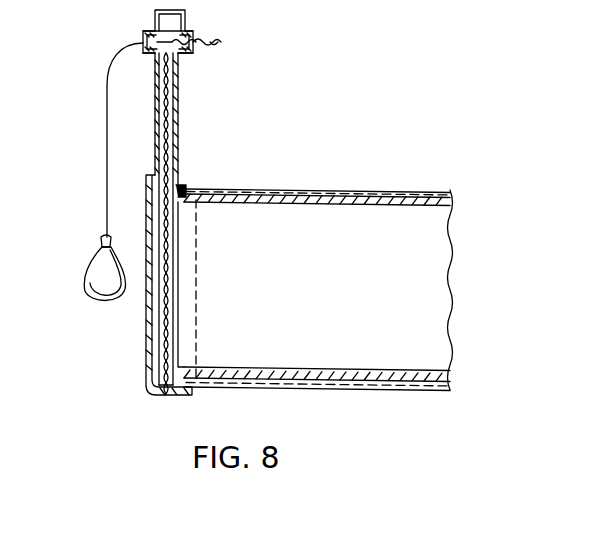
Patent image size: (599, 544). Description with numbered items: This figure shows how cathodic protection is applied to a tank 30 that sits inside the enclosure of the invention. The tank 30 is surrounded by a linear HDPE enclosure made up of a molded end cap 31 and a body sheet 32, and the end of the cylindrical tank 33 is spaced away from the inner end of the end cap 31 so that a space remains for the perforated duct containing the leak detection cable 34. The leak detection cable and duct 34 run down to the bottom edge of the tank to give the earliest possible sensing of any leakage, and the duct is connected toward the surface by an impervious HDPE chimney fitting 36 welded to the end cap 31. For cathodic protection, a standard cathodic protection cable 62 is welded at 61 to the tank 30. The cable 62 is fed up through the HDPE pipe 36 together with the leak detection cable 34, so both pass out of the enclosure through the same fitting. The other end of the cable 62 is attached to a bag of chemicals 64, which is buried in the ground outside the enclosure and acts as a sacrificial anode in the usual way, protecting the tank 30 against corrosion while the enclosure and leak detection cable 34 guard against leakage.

The tank 30 is at (358, 286).
The end cap 31 is at (148, 350).
The body sheet 32 is at (346, 192).
The end of the cylindrical tank 33 is at (197, 332).
The leak detection cable 34 is at (158, 322).
The HDPE chimney fitting 36 is at (180, 107).
The weld 61 is at (196, 212).
The cathodic protection cable 62 is at (173, 143).
The bag of chemicals 64 is at (84, 278).